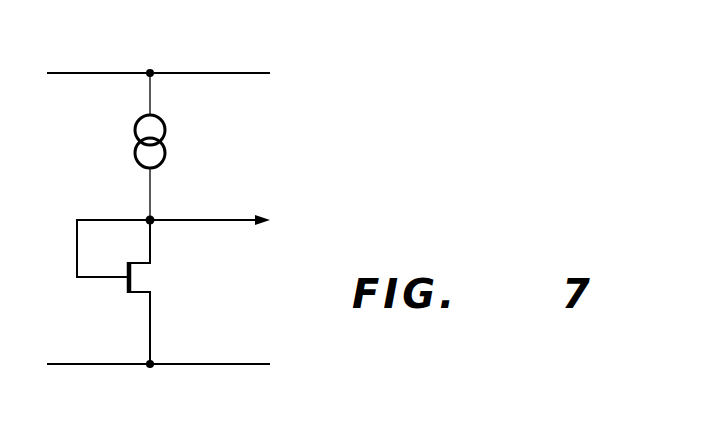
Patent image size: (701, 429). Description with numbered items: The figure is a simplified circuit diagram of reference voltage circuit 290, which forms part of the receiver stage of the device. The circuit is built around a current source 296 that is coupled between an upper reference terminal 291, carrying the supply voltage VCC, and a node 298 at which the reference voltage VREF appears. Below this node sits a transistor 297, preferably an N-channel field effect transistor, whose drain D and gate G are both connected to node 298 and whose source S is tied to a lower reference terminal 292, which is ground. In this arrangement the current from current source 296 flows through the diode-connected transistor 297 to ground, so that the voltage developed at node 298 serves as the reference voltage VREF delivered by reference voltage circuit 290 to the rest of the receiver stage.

The reference voltage circuit 290 is at (471, 239).
The reference terminal 291 is at (226, 72).
The reference terminal 292 is at (226, 363).
The current source 296 is at (136, 126).
The transistor 297 is at (131, 296).
The node 298 is at (152, 218).